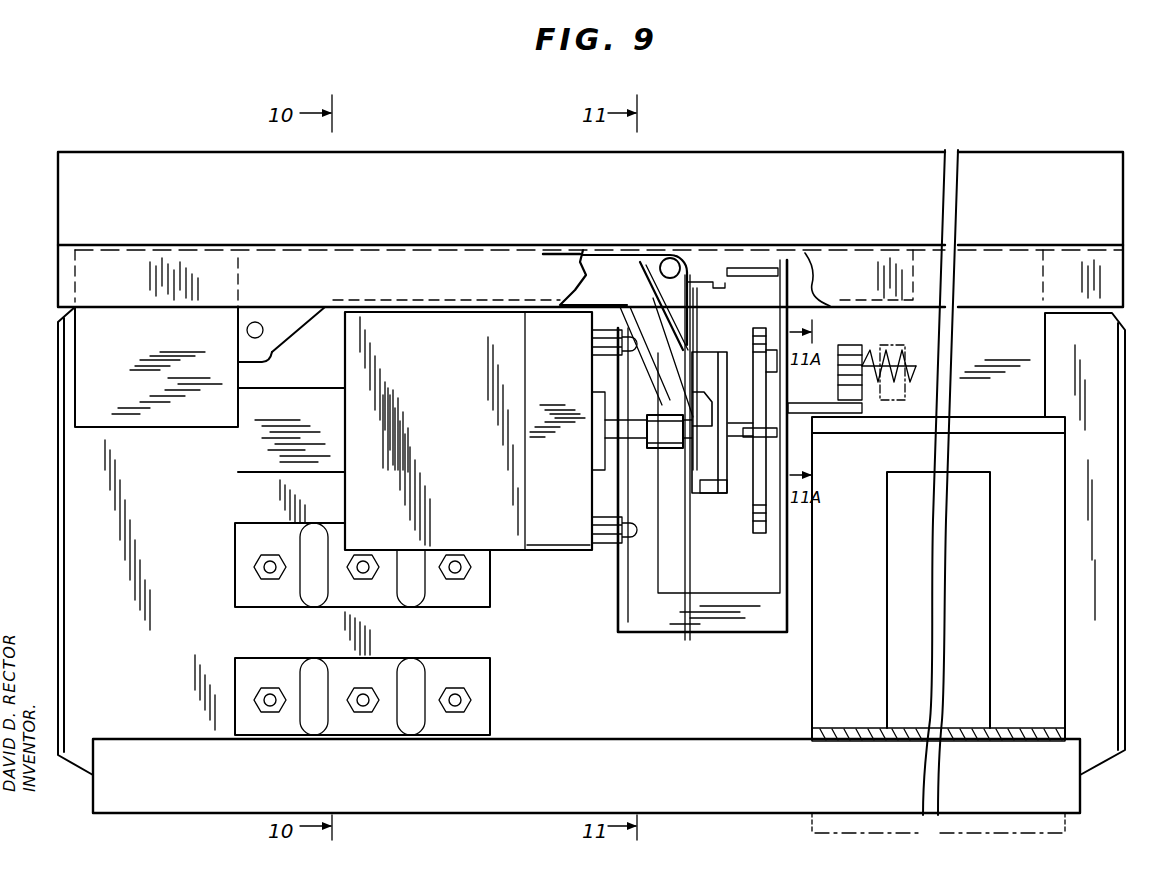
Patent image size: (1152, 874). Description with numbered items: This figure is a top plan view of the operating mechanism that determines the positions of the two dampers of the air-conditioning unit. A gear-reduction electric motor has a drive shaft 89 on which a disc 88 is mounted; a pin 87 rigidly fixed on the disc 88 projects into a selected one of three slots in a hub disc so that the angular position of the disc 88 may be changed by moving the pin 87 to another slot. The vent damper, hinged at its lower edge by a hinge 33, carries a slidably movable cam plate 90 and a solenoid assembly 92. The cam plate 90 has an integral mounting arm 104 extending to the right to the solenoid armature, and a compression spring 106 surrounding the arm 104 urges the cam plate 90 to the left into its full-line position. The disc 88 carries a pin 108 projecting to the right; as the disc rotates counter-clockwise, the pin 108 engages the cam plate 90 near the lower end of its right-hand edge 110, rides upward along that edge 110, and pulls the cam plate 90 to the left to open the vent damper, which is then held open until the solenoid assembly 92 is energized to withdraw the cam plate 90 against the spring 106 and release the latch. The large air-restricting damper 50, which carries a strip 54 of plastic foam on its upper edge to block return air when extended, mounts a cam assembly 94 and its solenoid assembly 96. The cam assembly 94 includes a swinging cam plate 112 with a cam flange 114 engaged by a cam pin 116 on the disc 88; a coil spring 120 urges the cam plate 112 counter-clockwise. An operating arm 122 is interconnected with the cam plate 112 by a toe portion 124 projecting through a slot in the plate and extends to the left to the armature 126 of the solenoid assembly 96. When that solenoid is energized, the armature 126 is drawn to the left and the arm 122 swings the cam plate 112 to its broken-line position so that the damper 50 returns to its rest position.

The strip of plastic foam 54 is at (68, 218).
The air-restricting damper 50 is at (63, 272).
The solenoid assembly 96 is at (73, 434).
The armature 126 is at (257, 320).
The operating arm 122 is at (296, 315).
The coil spring 120 is at (650, 254).
The cam pin 116 is at (755, 268).
The cam assembly 94 is at (712, 320).
The disc 88 is at (784, 575).
The drive shaft 89 is at (641, 428).
The swinging cam plate 112 is at (688, 482).
The toe portion 124 is at (702, 470).
The cam flange 114 is at (715, 500).
The pin 87 is at (758, 470).
The pin 108 is at (806, 405).
The cam plate 90 is at (842, 347).
The compression spring 106 is at (906, 358).
The mounting arm 104 is at (913, 370).
The solenoid assembly 92 is at (1035, 367).
The right-hand edge 110 is at (842, 410).
The hinge 33 is at (912, 722).